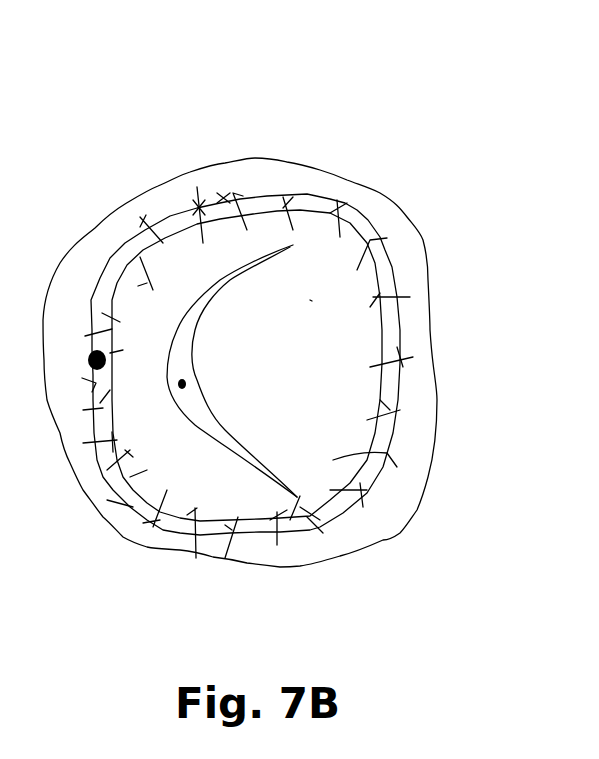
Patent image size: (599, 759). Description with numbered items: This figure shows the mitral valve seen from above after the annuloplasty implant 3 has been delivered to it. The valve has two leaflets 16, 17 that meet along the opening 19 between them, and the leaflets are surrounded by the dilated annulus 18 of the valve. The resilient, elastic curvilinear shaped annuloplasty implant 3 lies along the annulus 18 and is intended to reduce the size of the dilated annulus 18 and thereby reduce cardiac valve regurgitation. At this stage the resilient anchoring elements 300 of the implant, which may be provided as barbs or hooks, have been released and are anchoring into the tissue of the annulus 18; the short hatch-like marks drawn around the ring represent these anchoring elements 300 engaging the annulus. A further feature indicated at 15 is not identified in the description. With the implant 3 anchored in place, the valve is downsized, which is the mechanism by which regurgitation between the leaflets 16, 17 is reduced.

The prosthetic valve assembly 15 is at (307, 160).
The leaflet 16 is at (152, 292).
The leaflet 17 is at (310, 300).
The mitral valve annulus 18 is at (320, 194).
The opening 19 is at (180, 380).
The annuloplasty implant 3 is at (222, 195).
The anchoring elements 300 is at (200, 210).